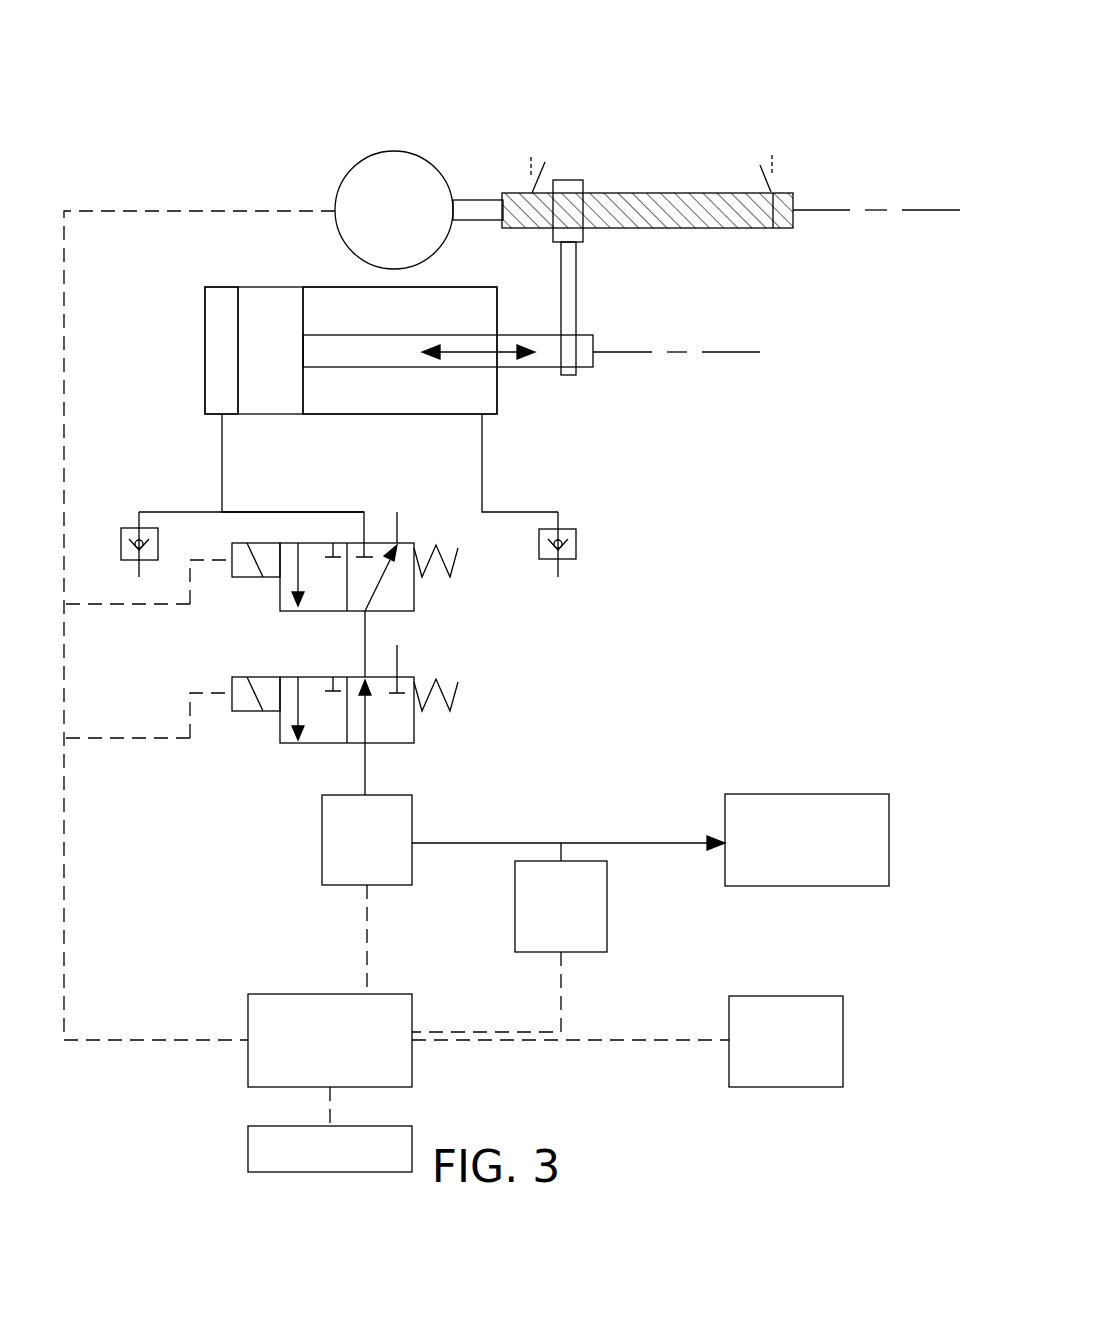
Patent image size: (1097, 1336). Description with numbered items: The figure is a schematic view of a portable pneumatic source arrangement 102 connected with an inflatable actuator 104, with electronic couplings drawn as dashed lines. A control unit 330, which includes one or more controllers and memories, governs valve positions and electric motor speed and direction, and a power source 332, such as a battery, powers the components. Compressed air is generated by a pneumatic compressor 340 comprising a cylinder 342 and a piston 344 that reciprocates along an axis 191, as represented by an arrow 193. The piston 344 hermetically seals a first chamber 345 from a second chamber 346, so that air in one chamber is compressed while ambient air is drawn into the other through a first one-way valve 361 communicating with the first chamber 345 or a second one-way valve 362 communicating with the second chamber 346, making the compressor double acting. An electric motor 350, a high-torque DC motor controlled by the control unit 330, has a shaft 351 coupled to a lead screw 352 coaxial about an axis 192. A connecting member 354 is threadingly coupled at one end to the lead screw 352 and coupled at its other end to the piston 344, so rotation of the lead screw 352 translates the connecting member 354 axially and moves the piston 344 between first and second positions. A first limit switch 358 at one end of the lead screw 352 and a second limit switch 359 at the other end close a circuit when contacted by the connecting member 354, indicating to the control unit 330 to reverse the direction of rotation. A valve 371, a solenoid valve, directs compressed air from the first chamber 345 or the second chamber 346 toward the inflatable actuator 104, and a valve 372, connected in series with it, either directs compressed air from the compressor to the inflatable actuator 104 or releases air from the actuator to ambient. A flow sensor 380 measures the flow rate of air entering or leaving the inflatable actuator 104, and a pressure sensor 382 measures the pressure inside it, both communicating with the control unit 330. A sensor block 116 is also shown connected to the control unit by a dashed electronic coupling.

The portable pneumatic source arrangement 102 is at (178, 52).
The inflatable actuator 104 is at (798, 796).
The sensor(s) 116 is at (757, 997).
The axis 191 is at (683, 355).
The axis 192 is at (850, 212).
The arrow 193 is at (473, 356).
The control unit 330 is at (388, 997).
The power source 332 is at (248, 1157).
The pneumatic compressor 340 is at (195, 340).
The cylinder 342 is at (223, 287).
The piston 344 is at (538, 334).
The first chamber 345 is at (218, 377).
The second chamber 346 is at (399, 321).
The electric motor 350 is at (336, 190).
The shaft 351 is at (485, 205).
The lead screw 352 is at (718, 226).
The connecting member 354 is at (578, 280).
The first limit switch 358 is at (548, 125).
The second limit switch 359 is at (752, 125).
The first one-way valve 361 is at (127, 540).
The second one-way valve 362 is at (570, 532).
The valve 371 is at (268, 623).
The valve 372 is at (268, 758).
The flow sensor 380 is at (325, 866).
The pressure sensor 382 is at (600, 903).